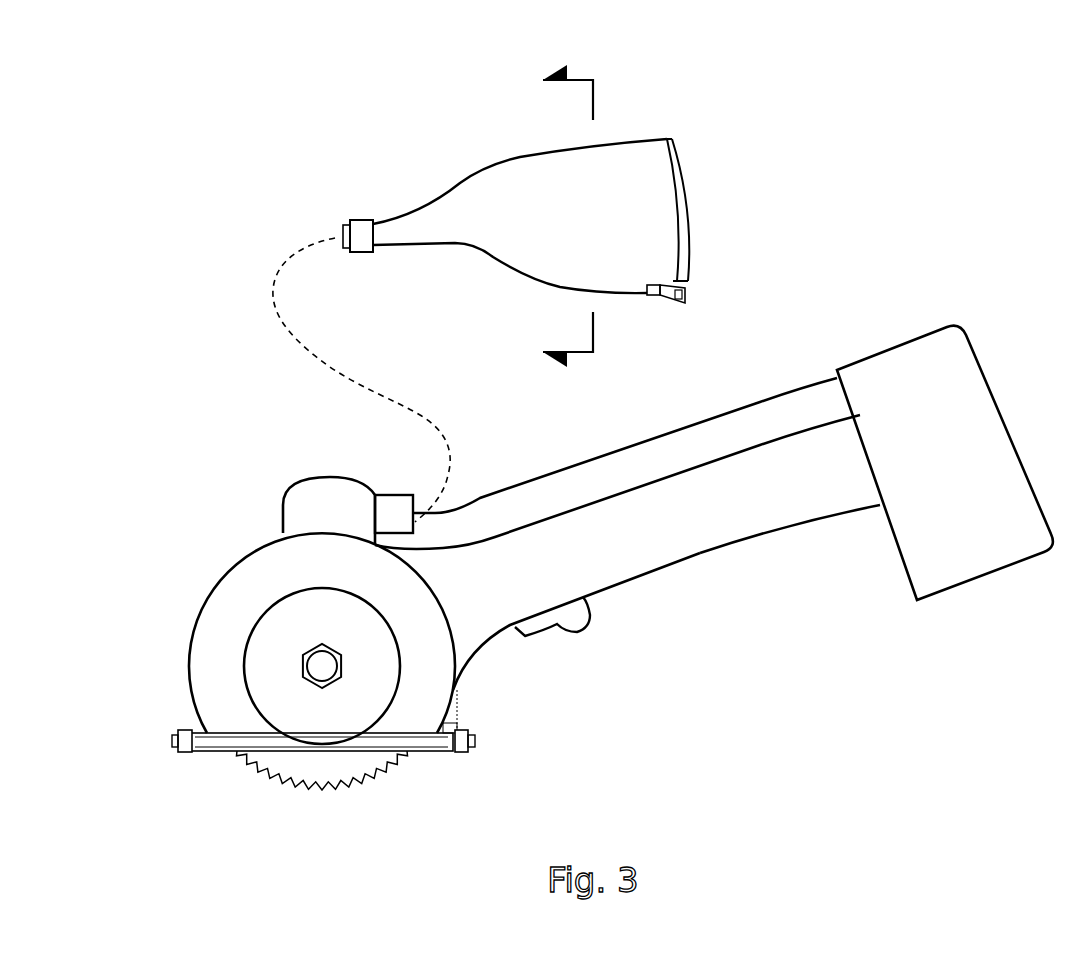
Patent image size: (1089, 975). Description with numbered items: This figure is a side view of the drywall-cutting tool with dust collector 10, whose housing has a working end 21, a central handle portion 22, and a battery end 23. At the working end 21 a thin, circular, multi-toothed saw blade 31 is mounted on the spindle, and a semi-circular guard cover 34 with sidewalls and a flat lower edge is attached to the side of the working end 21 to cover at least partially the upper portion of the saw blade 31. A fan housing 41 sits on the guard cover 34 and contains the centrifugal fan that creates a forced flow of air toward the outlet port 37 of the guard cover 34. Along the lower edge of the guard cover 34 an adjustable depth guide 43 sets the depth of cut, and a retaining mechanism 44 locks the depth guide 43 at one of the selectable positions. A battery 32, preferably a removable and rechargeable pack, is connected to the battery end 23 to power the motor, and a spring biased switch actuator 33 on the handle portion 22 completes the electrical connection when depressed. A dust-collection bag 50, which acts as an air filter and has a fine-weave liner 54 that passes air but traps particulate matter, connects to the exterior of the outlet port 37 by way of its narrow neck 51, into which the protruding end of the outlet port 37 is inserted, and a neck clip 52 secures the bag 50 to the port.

The drywall-cutting tool with dust collector 10 is at (836, 194).
The working end 21 is at (238, 558).
The central handle portion 22 is at (693, 567).
The battery end 23 is at (872, 517).
The saw blade 31 is at (367, 777).
The battery 32 is at (1007, 410).
The switch actuator 33 is at (593, 620).
The guard cover 34 is at (192, 635).
The outlet port 37 is at (400, 510).
The fan housing 41 is at (315, 500).
The depth guide 43 is at (175, 745).
The retaining mechanism 44 is at (476, 740).
The dust-collection bag 50 is at (634, 135).
The narrow neck 51 is at (343, 227).
The neck clip 52 is at (373, 252).
The liner 54 is at (685, 302).